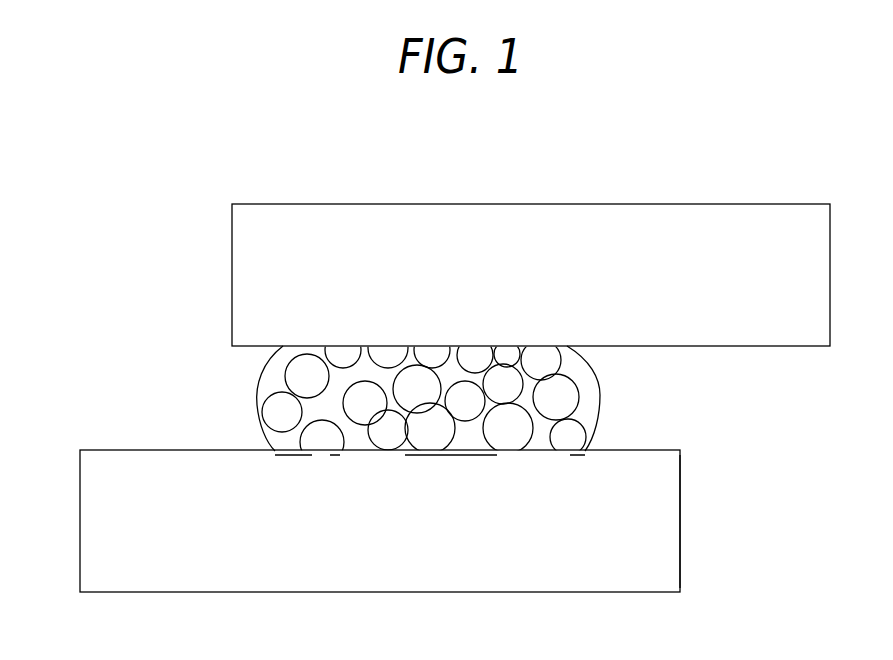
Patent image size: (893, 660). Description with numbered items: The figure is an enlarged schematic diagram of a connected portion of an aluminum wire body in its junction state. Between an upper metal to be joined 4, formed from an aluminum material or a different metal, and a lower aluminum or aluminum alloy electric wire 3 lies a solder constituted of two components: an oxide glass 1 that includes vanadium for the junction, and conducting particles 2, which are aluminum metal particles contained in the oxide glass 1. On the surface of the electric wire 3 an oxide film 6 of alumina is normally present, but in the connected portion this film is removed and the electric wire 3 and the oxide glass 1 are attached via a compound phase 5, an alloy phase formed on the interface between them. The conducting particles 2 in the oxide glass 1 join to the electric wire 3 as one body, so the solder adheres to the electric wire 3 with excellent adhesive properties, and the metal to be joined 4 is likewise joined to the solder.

The oxide glass 1 is at (262, 375).
The conducting particles 2 is at (432, 430).
The electric wire 3 is at (123, 528).
The metal to be joined 4 is at (832, 272).
The compound phase 5 is at (555, 453).
The oxide film 6 is at (682, 527).